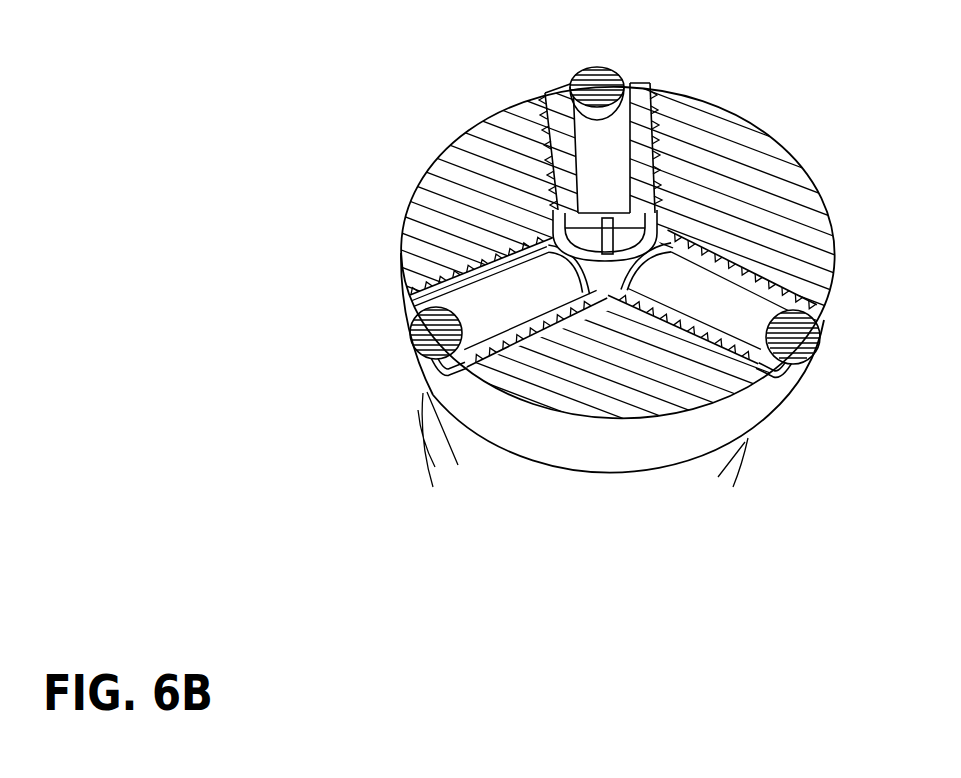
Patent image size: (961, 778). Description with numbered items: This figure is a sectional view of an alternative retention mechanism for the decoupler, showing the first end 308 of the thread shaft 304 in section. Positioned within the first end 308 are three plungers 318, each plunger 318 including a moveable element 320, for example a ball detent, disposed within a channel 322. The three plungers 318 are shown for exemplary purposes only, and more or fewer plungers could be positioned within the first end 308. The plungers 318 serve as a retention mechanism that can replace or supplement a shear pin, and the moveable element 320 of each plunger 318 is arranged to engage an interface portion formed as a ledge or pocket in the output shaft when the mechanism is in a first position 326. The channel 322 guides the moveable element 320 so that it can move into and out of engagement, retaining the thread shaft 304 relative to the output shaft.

The thread shaft 304 is at (752, 180).
The first end 308 is at (723, 417).
The plunger 318 is at (822, 310).
The moveable element 320 is at (800, 334).
The channel 322 is at (731, 318).
The first position 326 is at (612, 67).